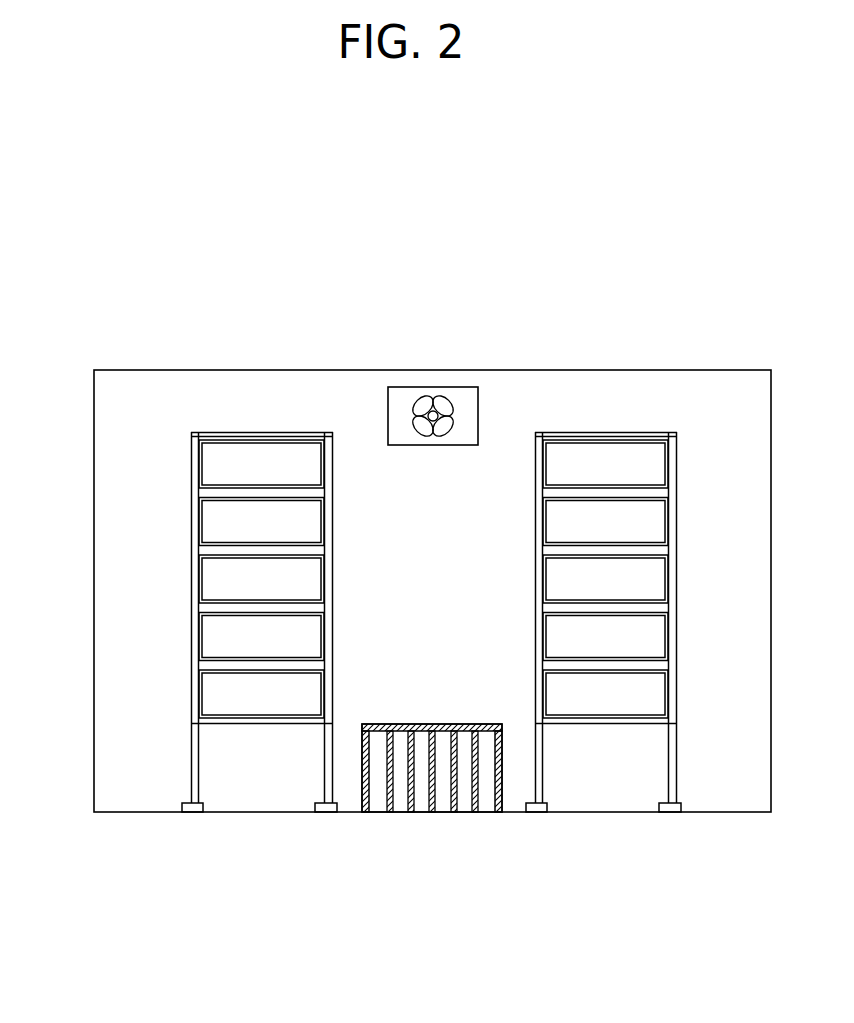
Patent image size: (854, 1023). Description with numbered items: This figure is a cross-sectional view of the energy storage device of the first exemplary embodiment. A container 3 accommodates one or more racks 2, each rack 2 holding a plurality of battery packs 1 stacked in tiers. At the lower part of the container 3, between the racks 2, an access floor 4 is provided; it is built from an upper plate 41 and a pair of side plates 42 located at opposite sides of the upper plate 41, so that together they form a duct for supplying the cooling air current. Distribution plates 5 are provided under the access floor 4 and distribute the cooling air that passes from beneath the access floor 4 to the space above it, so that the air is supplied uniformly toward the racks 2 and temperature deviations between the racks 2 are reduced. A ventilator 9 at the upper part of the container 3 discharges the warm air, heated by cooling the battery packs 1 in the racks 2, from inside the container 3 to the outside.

The battery pack 1 is at (230, 465).
The rack 2 is at (178, 622).
The container 3 is at (94, 660).
The access floor 4 is at (432, 768).
The upper plate 41 is at (437, 724).
The side plate 42 is at (502, 790).
The distribution plate 5 is at (437, 790).
The ventilator 9 is at (446, 400).